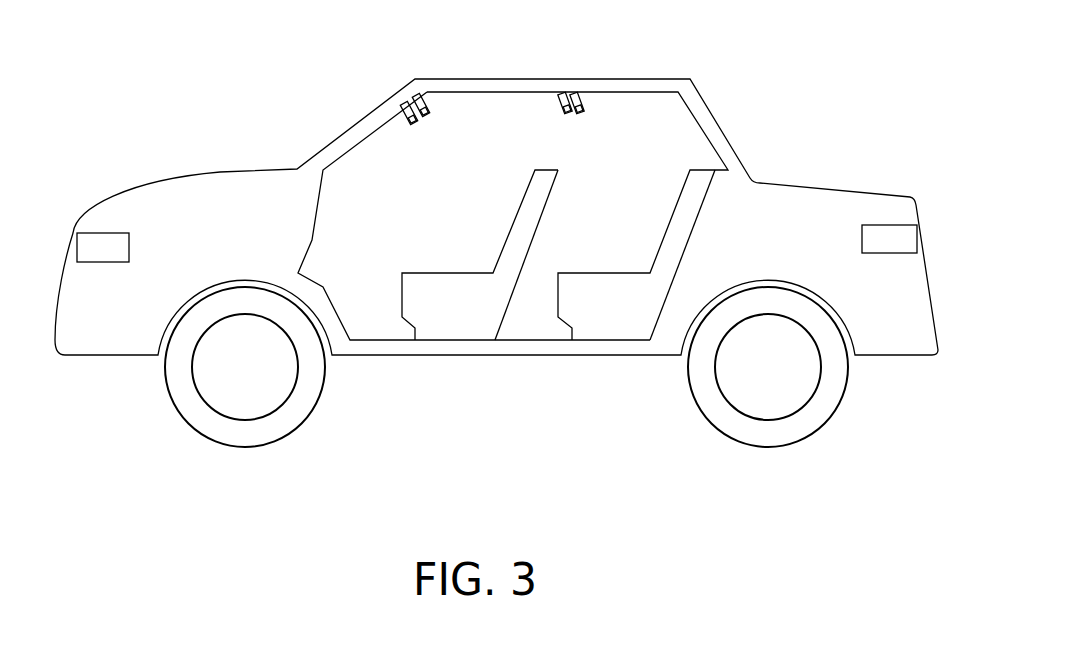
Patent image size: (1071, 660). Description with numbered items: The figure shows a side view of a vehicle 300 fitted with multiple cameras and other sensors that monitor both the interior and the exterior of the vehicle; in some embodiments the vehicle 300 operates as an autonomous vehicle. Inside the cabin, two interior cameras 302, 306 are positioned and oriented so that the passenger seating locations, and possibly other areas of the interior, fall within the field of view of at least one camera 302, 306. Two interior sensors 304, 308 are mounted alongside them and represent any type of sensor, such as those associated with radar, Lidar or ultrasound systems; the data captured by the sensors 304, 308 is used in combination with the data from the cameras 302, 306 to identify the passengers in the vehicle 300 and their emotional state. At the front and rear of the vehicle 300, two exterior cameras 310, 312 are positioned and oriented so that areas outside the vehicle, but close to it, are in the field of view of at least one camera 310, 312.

The vehicle 300 is at (207, 182).
The interior camera 302 is at (405, 122).
The interior sensor 304 is at (426, 104).
The interior camera 306 is at (561, 107).
The interior sensor 308 is at (584, 100).
The exterior camera 310 is at (115, 233).
The exterior camera 312 is at (880, 225).